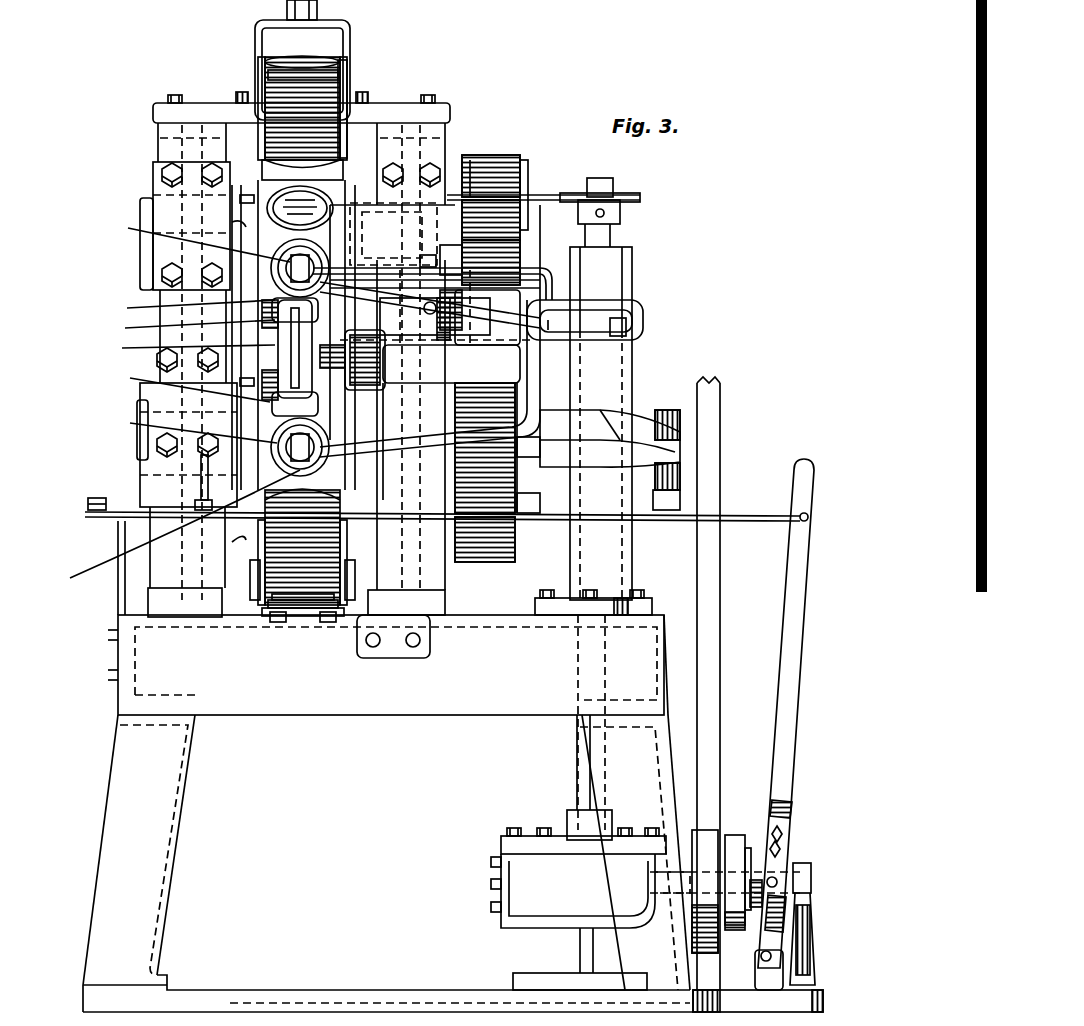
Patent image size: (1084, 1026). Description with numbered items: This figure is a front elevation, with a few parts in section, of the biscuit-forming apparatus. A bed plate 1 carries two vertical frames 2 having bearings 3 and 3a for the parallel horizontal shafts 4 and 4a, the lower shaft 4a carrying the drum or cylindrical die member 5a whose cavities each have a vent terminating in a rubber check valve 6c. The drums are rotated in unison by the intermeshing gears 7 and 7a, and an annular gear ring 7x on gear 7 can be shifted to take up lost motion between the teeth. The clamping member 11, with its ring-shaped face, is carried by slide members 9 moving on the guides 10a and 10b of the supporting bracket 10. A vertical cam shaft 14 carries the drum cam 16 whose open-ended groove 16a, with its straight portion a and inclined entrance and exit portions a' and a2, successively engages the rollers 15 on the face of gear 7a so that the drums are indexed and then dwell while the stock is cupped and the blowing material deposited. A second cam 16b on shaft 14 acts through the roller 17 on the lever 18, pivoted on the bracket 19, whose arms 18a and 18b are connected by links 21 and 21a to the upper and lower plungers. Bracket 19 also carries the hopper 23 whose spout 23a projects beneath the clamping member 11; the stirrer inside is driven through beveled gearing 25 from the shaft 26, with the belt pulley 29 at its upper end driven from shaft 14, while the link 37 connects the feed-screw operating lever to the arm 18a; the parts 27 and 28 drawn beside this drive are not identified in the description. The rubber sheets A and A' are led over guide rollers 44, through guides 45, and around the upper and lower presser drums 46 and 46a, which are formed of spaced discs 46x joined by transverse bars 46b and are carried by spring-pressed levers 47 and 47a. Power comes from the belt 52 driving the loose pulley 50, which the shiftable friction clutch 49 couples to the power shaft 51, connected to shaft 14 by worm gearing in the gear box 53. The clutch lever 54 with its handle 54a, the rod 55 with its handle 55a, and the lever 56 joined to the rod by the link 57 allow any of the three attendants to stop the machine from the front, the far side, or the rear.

The bed plate 1 is at (362, 692).
The vertical frames 2 is at (170, 150).
The bearings 3 is at (152, 212).
The bearings 3a is at (140, 402).
The horizontal shaft 4 is at (140, 262).
The horizontal shaft 4a is at (137, 445).
The drum or cylindrical die member 5a is at (265, 205).
The check valve 6c is at (245, 225).
The gear 7 is at (486, 160).
The gear 7a is at (492, 545).
The annular gear ring 7x is at (522, 170).
The slide members 9 is at (190, 326).
The supporting bracket 10 is at (186, 346).
The supporting guide 10a is at (185, 306).
The supporting guide 10b is at (183, 381).
The clamping member 11 is at (193, 330).
The vertical cam shaft 14 is at (557, 786).
The rollers 15 is at (528, 500).
The drum cam 16 is at (660, 410).
The cam groove 16a is at (655, 462).
The second cam 16b is at (548, 320).
The anti-friction cam-contact roller 17 is at (628, 326).
The lever 18 is at (580, 312).
The arm 18a is at (460, 278).
The arm 18b is at (428, 432).
The supporting bracket 19 is at (450, 592).
The link 21 is at (303, 262).
The link 21a is at (177, 528).
The hopper 23 is at (393, 234).
The spout 23a is at (360, 345).
The beveled gearing 25 is at (462, 262).
The shaft 26 is at (521, 218).
The pin 27 is at (480, 195).
The shaft 28 is at (500, 197).
The belt pulley 29 is at (630, 198).
The link 37 is at (420, 260).
The guide rollers 44 is at (300, 612).
The guides 45 is at (255, 602).
The upper presser drum 46 is at (290, 72).
The lower presser drum 46a is at (330, 612).
The transverse bars or rods 46b is at (292, 86).
The spaced discs 46x is at (340, 76).
The lever 47 is at (262, 30).
The lever 47a is at (272, 608).
The shiftable friction clutch member 49 is at (735, 845).
The loose pulley 50 is at (708, 832).
The power shaft 51 is at (808, 868).
The belt 52 is at (708, 752).
The gear box 53 is at (590, 909).
The clutch lever 54 is at (786, 645).
The handle 54a is at (795, 468).
The rod 55 is at (762, 514).
The handle 55a is at (205, 487).
The lever 56 is at (92, 500).
The link 57 is at (118, 527).
The sheet of plastic material A is at (329, 35).
The sheet of plastic material A' is at (291, 633).
The horizontal or straight portion a is at (610, 423).
The inclined roller entrance portion a' is at (668, 486).
The inclined exit portion a2 is at (632, 410).